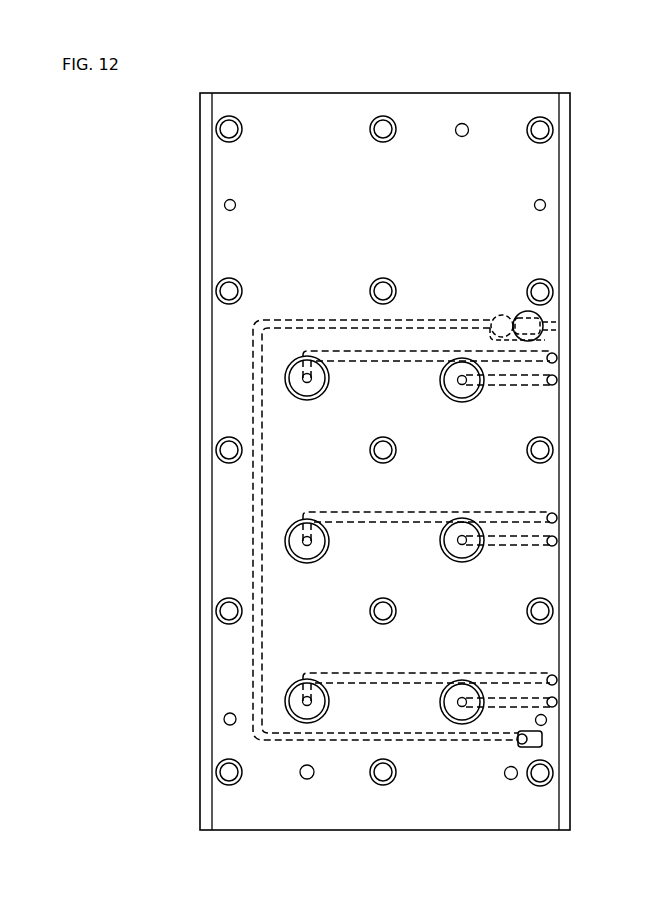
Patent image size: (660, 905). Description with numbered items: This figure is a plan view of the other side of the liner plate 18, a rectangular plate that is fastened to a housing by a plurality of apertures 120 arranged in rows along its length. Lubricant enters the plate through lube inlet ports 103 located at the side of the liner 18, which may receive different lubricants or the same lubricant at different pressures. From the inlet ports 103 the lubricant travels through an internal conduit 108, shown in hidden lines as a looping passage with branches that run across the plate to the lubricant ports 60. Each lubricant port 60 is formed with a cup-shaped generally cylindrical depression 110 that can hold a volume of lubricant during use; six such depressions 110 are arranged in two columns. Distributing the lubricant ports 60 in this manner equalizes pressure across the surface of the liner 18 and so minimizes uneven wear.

The liner plate 18 is at (418, 112).
The lubricant port 60 is at (307, 705).
The lube inlet port 103 is at (568, 331).
The internal conduit 108 is at (258, 485).
The cup-shaped generally cylindrical depression 110 is at (480, 392).
The apertures 120 is at (229, 125).